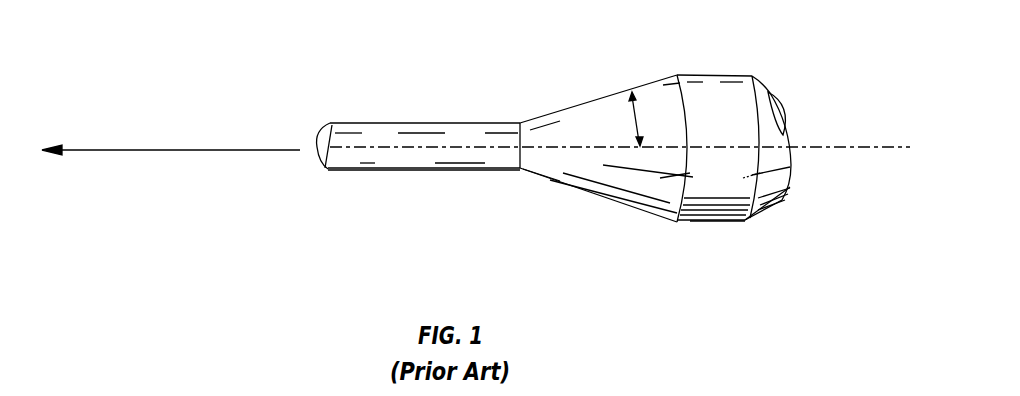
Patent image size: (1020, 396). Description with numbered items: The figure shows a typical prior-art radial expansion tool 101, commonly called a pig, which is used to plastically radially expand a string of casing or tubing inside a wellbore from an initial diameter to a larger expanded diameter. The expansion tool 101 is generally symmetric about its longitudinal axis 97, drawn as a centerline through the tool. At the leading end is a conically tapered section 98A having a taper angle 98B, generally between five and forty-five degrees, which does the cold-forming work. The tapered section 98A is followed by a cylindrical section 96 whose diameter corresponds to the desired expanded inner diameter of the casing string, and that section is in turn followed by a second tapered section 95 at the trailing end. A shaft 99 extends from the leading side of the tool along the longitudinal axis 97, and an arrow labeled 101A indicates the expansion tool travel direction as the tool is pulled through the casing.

The tapered section 95 is at (760, 82).
The cylindrical section 96 is at (703, 73).
The longitudinal axis 97 is at (843, 146).
The tapered section 98A is at (580, 192).
The taper angle 98B is at (635, 117).
The shaft 99 is at (387, 123).
The expansion tool 101 is at (715, 221).
The expansion tool travel direction 101A is at (172, 148).